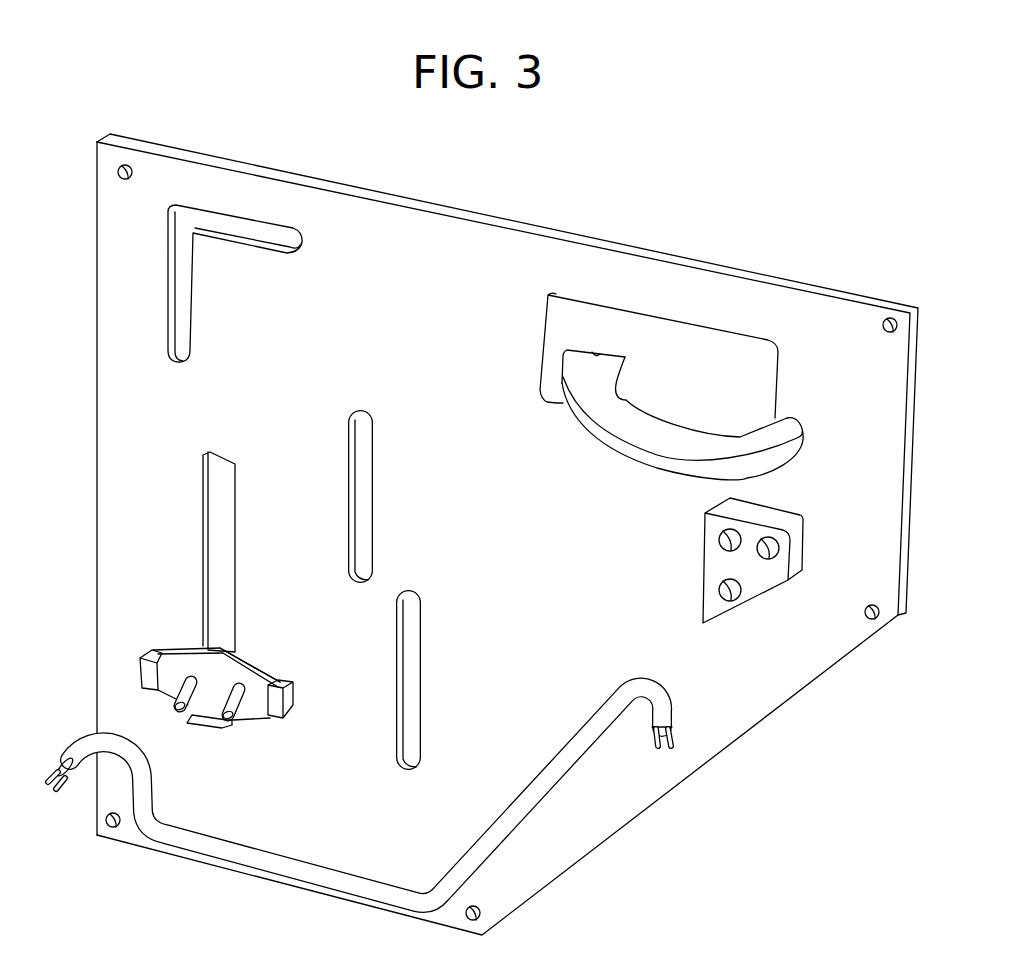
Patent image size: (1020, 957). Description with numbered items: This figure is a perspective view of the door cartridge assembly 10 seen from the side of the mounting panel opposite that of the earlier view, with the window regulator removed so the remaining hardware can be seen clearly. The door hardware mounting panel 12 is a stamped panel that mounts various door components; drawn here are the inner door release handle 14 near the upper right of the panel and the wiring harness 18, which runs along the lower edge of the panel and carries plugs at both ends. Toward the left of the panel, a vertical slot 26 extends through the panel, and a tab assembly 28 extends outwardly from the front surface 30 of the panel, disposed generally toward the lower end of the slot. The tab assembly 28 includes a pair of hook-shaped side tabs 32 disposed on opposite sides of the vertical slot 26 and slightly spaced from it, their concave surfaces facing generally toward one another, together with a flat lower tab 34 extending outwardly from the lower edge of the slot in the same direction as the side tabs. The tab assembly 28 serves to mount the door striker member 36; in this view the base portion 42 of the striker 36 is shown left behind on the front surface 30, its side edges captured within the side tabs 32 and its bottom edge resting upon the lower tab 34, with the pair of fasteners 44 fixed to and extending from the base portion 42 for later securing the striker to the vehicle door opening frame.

The door cartridge assembly 10 is at (925, 311).
The door hardware mounting panel 12 is at (731, 722).
The inner door release handle 14 is at (633, 428).
The wiring harness 18 is at (157, 833).
The vertical slot 26 is at (207, 513).
The tab assembly 28 is at (137, 643).
The front surface 30 is at (112, 498).
The hook-shaped side tabs 32 is at (138, 672).
The lower tab 34 is at (207, 730).
The door striker member 36 is at (245, 652).
The base portion 42 is at (192, 660).
The fasteners 44 is at (180, 712).